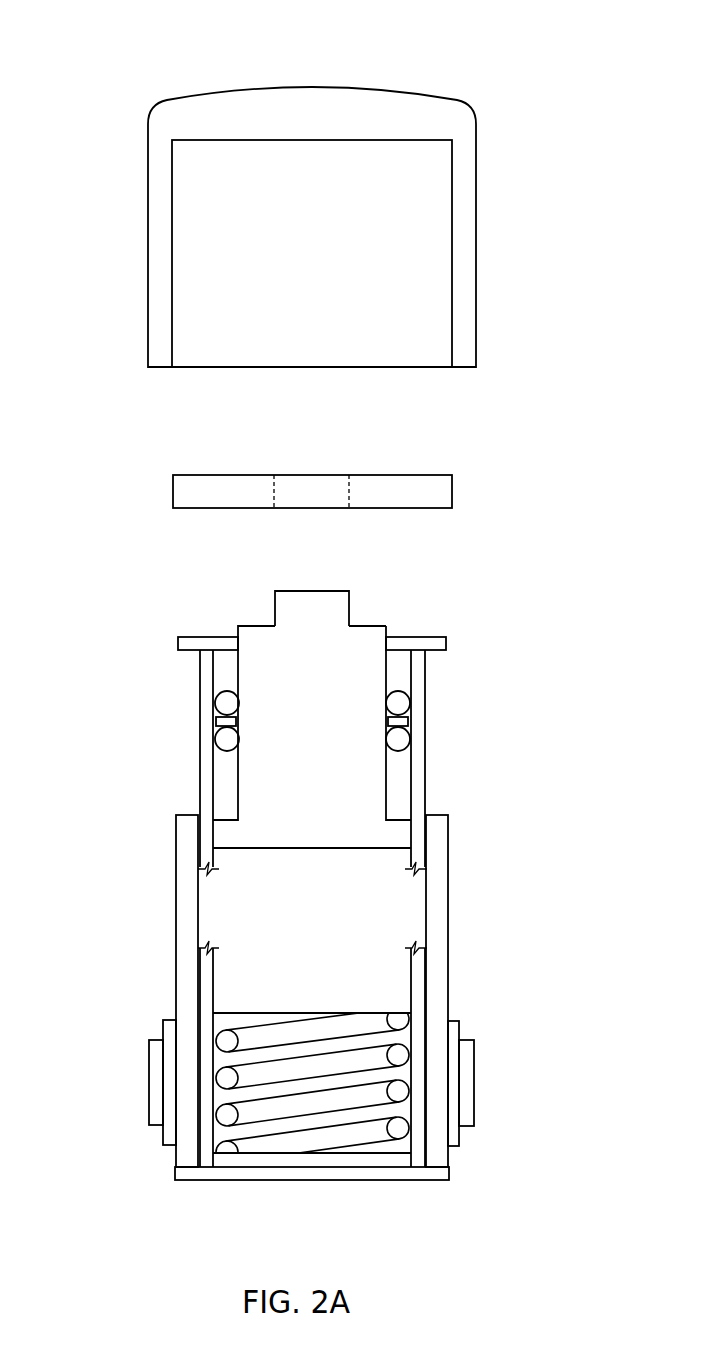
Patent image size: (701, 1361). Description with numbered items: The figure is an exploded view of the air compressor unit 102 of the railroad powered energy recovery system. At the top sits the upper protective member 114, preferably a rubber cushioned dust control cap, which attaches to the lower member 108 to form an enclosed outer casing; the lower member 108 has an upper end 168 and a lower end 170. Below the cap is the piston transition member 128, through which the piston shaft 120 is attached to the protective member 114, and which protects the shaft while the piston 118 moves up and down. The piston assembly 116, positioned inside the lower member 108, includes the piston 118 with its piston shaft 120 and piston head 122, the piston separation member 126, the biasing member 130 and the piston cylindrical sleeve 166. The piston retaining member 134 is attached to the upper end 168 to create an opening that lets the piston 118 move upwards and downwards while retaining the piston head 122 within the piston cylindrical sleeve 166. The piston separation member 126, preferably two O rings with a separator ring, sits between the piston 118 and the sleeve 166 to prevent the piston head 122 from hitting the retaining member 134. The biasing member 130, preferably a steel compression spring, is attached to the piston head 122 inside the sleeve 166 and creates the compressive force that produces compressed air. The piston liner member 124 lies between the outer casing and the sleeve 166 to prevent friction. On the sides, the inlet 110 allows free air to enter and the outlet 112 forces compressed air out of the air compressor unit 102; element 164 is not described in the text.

The air compressor unit 102 is at (277, 53).
The upper protective member 114 is at (423, 96).
The piston transition member 128 is at (452, 491).
The piston shaft 120 is at (333, 591).
The piston 118 is at (257, 638).
The piston assembly 116 is at (363, 622).
The piston retaining member 134 is at (195, 637).
The piston liner member 124 is at (425, 755).
The piston separation member 126 is at (402, 702).
The piston head 122 is at (230, 842).
The upper end 168 is at (443, 838).
The lower member 108 is at (449, 912).
The piston cylindrical sleeve 166 is at (412, 970).
The biasing member 130 is at (223, 1040).
The side plate 164 is at (460, 1025).
The inlet 110 is at (150, 1103).
The outlet 112 is at (475, 1103).
The lower end 170 is at (450, 1163).